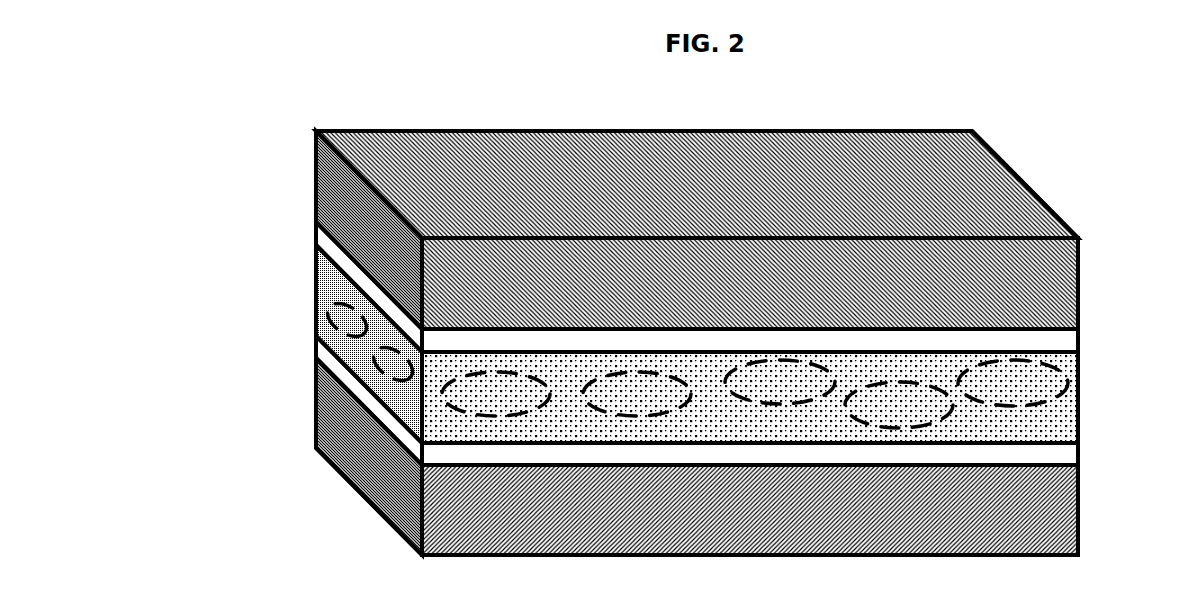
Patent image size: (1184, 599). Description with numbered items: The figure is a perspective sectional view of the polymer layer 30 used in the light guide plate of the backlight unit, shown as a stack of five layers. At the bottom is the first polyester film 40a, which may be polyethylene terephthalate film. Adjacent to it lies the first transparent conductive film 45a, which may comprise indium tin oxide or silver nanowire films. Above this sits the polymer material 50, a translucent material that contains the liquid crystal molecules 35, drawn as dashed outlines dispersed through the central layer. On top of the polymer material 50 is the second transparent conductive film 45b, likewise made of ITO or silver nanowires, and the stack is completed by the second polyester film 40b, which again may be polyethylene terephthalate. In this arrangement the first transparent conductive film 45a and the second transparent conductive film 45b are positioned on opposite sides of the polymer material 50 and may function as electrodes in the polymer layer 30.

The polymer layer 30 is at (130, 162).
The second polyester film 40b is at (316, 164).
The second transparent conductive film 45b is at (316, 232).
The polymer material 50 is at (316, 285).
The first transparent conductive film 45a is at (316, 346).
The first polyester film 40a is at (316, 420).
The liquid crystal molecules 35 is at (1052, 404).